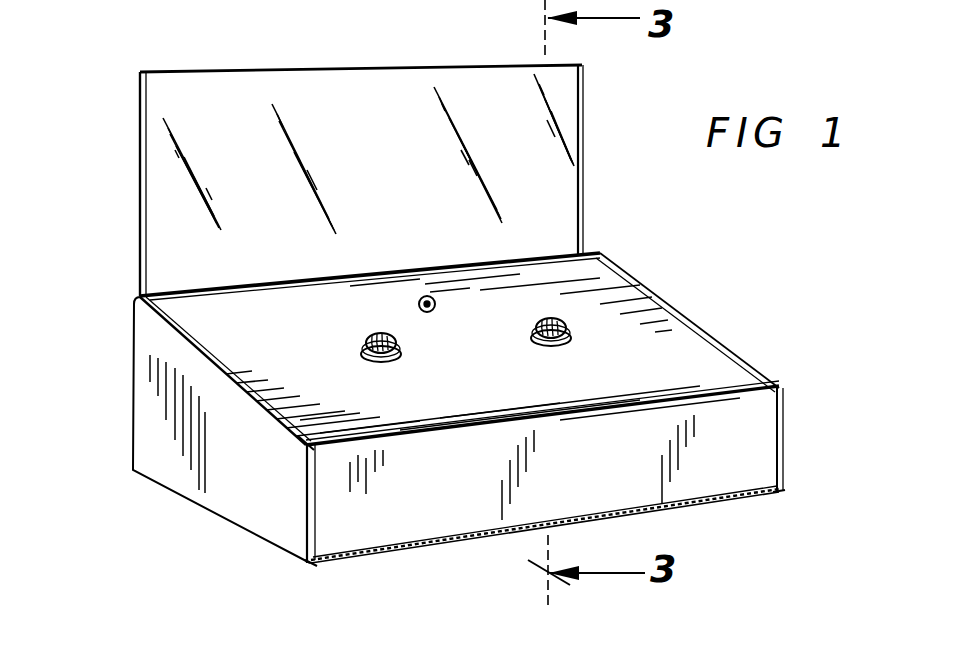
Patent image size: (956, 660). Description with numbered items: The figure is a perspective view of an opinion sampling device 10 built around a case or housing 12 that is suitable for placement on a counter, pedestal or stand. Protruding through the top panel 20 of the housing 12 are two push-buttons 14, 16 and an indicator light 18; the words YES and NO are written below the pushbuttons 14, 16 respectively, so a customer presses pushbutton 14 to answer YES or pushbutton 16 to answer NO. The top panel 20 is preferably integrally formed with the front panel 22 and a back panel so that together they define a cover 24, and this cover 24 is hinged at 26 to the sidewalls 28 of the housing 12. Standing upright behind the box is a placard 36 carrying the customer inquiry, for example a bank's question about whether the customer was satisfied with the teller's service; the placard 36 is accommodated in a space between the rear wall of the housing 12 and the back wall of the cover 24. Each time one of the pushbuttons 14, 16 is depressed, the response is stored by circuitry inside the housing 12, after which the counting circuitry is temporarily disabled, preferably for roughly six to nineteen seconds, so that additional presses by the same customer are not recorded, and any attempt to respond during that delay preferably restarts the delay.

The opinion sampling device 10 is at (118, 272).
The housing 12 is at (124, 398).
The push-button 14 is at (362, 350).
The push-button 16 is at (565, 324).
The indicator light 18 is at (420, 308).
The top panel 20 is at (700, 328).
The front panel 22 is at (420, 525).
The cover 24 is at (302, 442).
The hinge 26 is at (311, 566).
The sidewalls 28 is at (158, 468).
The placard 36 is at (240, 92).